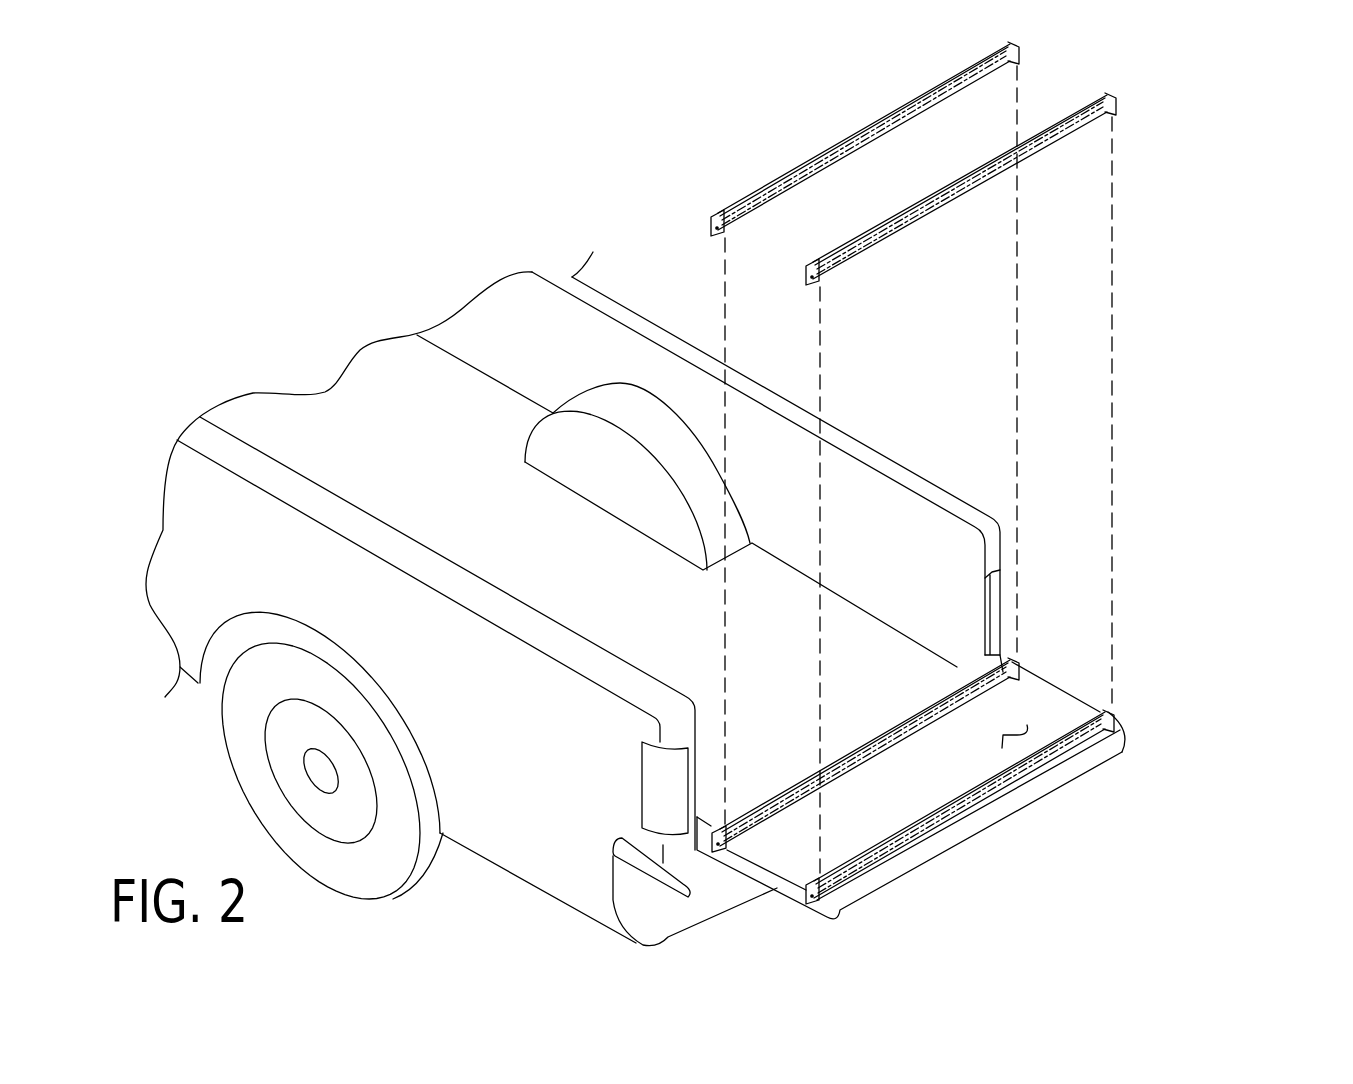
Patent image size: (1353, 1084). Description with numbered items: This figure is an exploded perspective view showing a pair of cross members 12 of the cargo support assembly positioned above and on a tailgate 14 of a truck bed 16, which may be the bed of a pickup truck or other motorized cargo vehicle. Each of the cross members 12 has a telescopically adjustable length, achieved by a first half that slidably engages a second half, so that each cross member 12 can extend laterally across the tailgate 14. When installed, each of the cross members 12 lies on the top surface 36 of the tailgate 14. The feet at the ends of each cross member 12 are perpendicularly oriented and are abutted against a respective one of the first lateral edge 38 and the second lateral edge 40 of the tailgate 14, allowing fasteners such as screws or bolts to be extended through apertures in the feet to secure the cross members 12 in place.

The cross member 12 is at (957, 812).
The tailgate 14 is at (1127, 742).
The truck bed 16 is at (622, 313).
The top surface 36 is at (1015, 738).
The first lateral edge 38 is at (777, 885).
The second lateral edge 40 is at (1057, 687).